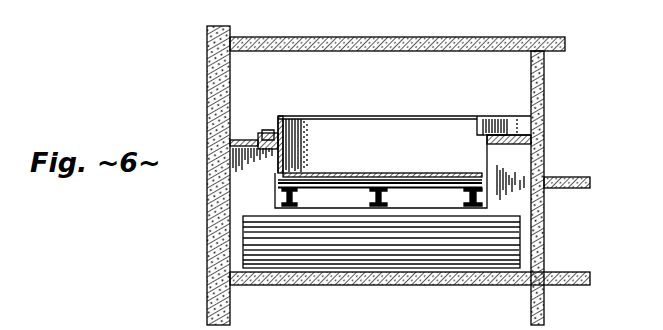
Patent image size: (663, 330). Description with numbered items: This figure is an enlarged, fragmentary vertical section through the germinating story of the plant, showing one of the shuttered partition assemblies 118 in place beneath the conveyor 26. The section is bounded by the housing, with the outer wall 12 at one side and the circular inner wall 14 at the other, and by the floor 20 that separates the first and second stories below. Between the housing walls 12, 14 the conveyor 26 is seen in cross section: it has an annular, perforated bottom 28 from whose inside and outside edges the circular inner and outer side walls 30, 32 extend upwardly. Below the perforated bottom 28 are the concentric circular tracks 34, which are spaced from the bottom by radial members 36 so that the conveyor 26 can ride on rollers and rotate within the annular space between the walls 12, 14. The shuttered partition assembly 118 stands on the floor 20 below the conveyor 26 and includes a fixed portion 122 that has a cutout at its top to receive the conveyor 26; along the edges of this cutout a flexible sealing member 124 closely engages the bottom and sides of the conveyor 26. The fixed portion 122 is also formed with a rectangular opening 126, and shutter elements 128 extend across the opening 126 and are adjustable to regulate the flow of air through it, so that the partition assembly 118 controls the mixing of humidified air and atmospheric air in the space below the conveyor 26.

The outer wall 12 is at (260, 218).
The inner wall 14 is at (544, 77).
The floor 20 is at (423, 288).
The conveyor 26 is at (384, 145).
The perforated bottom 28 is at (333, 177).
The inner side wall 30 is at (477, 123).
The outer side wall 32 is at (278, 118).
The circular tracks 34 is at (292, 198).
The radial members 36 is at (417, 185).
The shuttered partition assembly 118 is at (245, 196).
The fixed portion 122 is at (520, 171).
The flexible sealing member 124 is at (350, 200).
The rectangular opening 126 is at (247, 230).
The shutter elements 128 is at (343, 250).